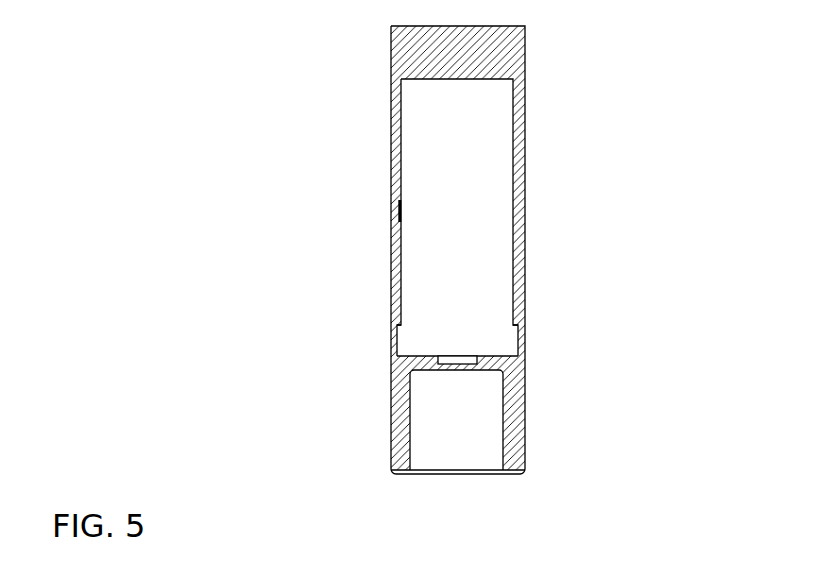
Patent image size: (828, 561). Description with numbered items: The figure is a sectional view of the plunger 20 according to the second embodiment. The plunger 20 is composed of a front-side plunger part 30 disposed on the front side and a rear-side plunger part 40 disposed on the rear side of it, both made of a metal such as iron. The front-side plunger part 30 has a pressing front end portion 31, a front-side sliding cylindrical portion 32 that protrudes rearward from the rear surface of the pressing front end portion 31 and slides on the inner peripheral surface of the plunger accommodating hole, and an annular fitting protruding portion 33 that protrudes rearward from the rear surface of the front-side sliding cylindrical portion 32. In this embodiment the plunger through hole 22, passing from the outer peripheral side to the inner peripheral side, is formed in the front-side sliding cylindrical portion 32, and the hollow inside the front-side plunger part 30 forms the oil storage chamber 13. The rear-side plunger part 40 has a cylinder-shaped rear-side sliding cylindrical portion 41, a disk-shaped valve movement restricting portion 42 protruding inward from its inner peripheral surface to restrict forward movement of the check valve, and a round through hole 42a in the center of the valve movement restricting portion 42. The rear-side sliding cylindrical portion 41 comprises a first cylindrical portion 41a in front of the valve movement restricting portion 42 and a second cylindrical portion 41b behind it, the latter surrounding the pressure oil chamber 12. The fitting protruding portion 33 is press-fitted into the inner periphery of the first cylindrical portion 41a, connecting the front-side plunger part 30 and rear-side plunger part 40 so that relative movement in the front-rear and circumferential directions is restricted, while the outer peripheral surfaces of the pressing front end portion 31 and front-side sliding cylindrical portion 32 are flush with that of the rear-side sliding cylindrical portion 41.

The plunger 20 is at (297, 89).
The front-side plunger part 30 is at (387, 170).
The pressing front end portion 31 is at (500, 50).
The front-side sliding cylindrical portion 32 is at (526, 170).
The fitting protruding portion 33 is at (524, 319).
The plunger through hole 22 is at (395, 205).
The oil storage chamber 13 is at (469, 222).
The pressure oil chamber 12 is at (470, 430).
The rear-side plunger part 40 is at (387, 367).
The rear-side sliding cylindrical portion 41 is at (657, 355).
The first cylindrical portion 41a is at (525, 338).
The second cylindrical portion 41b is at (525, 412).
The valve movement restricting portion 42 is at (410, 370).
The through hole 42a is at (450, 364).